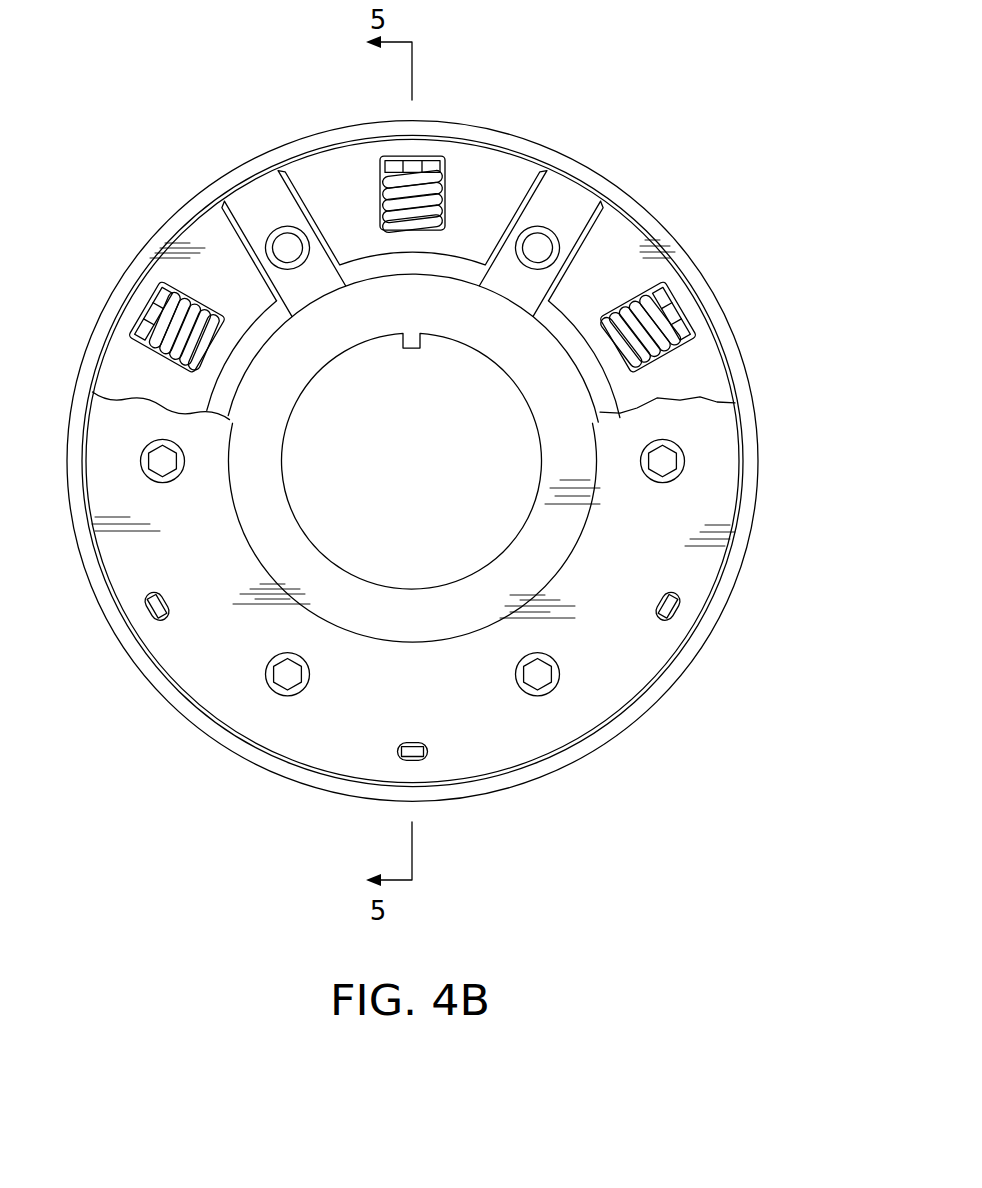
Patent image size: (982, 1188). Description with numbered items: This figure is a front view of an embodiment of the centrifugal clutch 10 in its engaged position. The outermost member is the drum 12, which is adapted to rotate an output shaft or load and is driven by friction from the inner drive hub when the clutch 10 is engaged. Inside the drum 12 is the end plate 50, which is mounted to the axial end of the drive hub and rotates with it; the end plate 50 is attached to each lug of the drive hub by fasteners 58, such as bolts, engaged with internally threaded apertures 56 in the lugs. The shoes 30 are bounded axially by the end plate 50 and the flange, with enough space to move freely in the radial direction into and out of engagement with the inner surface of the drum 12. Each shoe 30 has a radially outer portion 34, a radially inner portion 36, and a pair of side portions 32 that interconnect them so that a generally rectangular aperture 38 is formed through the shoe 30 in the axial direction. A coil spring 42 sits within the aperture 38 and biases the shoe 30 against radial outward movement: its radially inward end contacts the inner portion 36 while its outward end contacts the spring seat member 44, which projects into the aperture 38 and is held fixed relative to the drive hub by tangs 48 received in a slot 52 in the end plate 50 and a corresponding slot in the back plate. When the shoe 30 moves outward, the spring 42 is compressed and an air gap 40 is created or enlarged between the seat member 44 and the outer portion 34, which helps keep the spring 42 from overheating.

The centrifugal clutch 10 is at (653, 125).
The drum 12 is at (287, 143).
The shoe 30 is at (403, 284).
The side portion 32 is at (512, 182).
The radially outer portion 34 is at (395, 154).
The radially inner portion 36 is at (422, 238).
The aperture 38 is at (412, 208).
The air gap 40 is at (414, 165).
The spring 42 is at (381, 204).
The spring seat member 44 is at (416, 166).
The tang 48 is at (150, 614).
The end plate 50 is at (613, 655).
The slot 52 is at (152, 618).
The aperture 56 is at (287, 243).
The fastener 58 is at (140, 457).